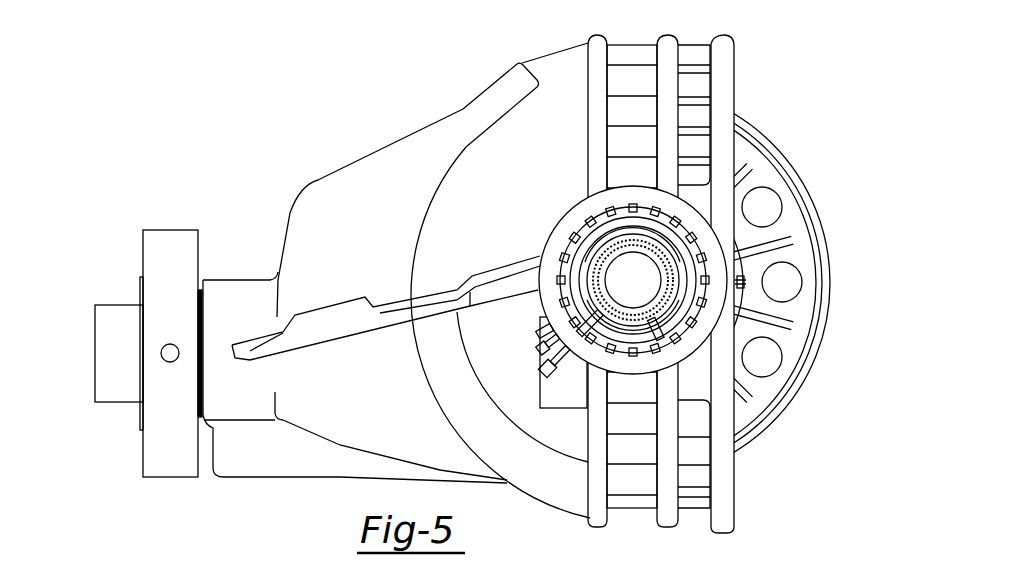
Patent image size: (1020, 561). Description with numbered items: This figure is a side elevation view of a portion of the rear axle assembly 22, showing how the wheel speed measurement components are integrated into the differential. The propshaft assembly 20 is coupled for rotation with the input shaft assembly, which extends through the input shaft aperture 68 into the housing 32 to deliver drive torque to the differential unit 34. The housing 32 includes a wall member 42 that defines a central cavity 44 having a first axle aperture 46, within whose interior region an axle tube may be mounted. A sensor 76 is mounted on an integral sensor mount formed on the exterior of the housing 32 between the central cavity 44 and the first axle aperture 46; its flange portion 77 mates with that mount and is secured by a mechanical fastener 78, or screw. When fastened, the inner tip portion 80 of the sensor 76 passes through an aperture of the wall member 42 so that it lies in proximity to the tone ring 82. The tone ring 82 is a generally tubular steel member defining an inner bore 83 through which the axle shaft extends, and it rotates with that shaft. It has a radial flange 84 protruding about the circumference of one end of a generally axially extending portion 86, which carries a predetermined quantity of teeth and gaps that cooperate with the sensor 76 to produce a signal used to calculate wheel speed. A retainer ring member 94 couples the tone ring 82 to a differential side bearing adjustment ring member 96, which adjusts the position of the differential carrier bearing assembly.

The propshaft assembly 20 is at (90, 407).
The rear axle assembly 22 is at (427, 280).
The housing 32 is at (322, 205).
The differential unit 34 is at (813, 201).
The wall member 42 is at (560, 238).
The central cavity 44 is at (462, 177).
The first axle aperture 46 is at (533, 309).
The input shaft aperture 68 is at (238, 300).
The sensor 76 is at (538, 188).
The flange portion 77 is at (582, 192).
The mechanical fastener 78 is at (568, 187).
The tip portion 80 is at (598, 258).
The tone ring 82 is at (621, 236).
The inner bore 83 is at (657, 407).
The radial flange 84 is at (667, 315).
The axially extending portion 86 is at (663, 257).
The retainer ring member 94 is at (587, 312).
The differential side bearing adjustment ring member 96 is at (563, 310).